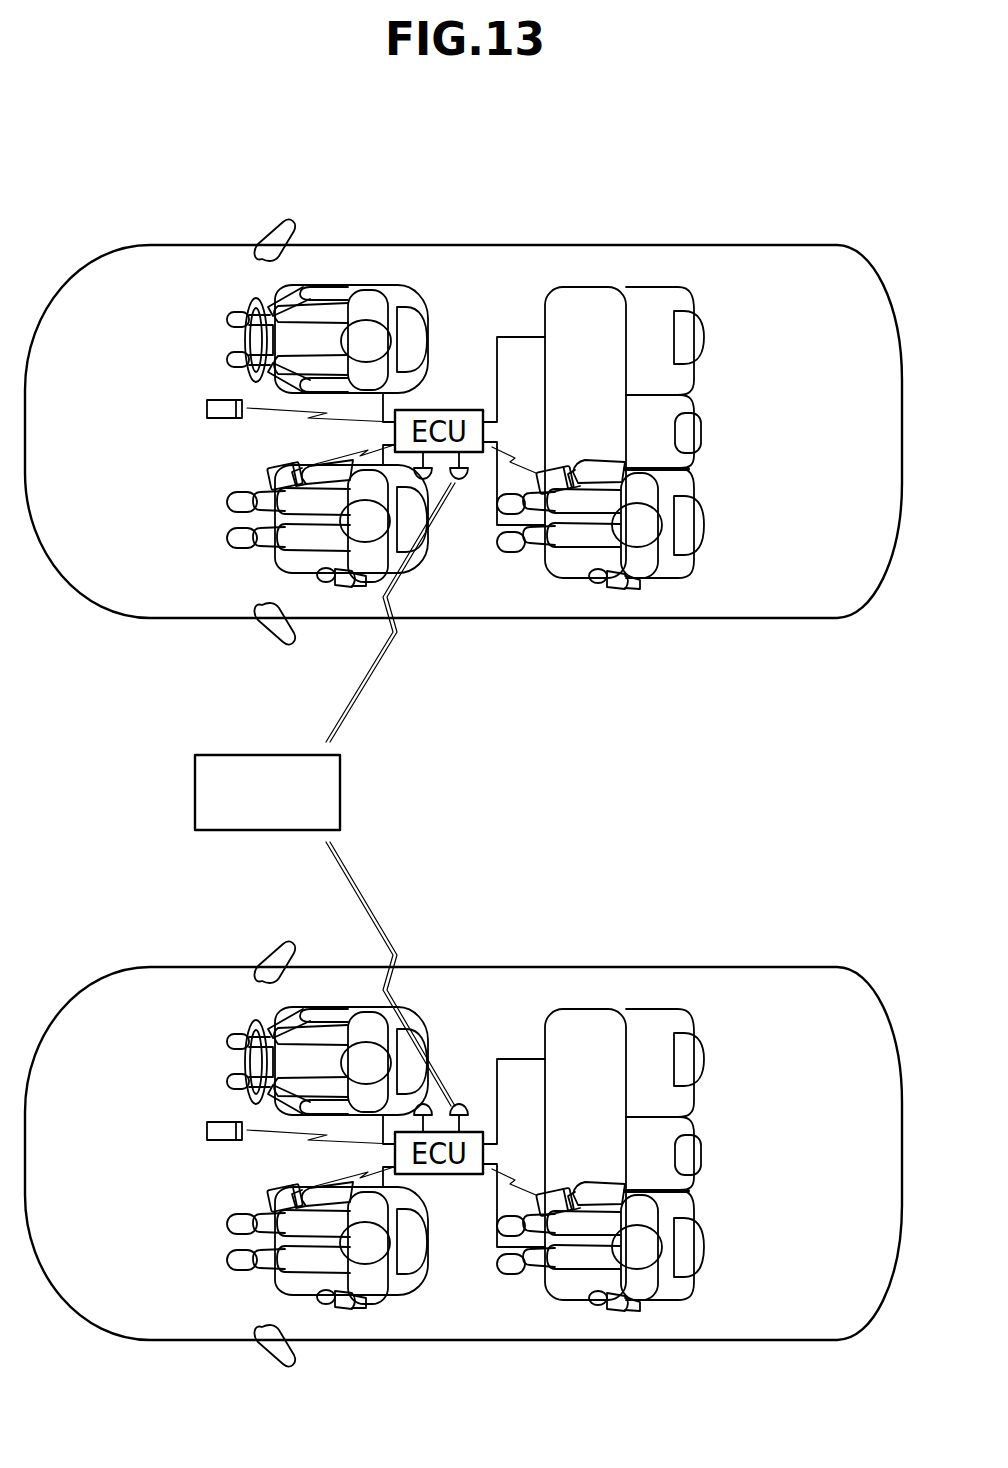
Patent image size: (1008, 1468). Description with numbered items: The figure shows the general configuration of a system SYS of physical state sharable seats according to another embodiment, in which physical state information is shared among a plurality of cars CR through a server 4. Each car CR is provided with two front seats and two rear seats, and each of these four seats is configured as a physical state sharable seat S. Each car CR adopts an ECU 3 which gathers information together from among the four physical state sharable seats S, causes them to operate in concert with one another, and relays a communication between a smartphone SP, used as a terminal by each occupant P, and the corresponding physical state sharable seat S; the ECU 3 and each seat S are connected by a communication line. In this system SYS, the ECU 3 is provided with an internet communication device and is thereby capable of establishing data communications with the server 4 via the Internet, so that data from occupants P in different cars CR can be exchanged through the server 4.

The system SYS is at (145, 199).
The car CR is at (537, 244).
The occupant P is at (375, 298).
The physical state sharable seat S is at (416, 288).
The smartphone SP is at (268, 474).
The ECU 3 is at (466, 410).
The server 4 is at (195, 780).